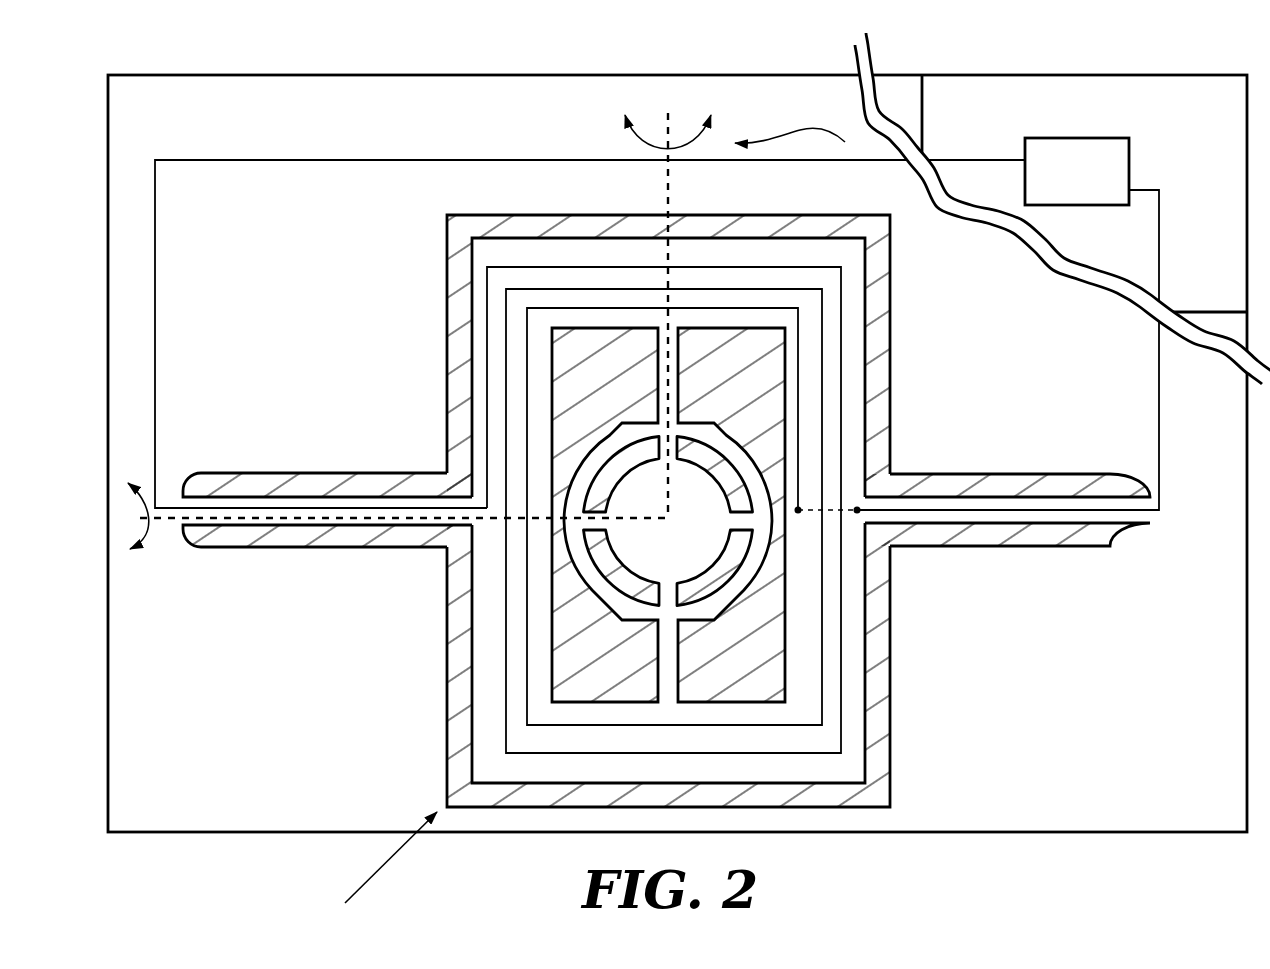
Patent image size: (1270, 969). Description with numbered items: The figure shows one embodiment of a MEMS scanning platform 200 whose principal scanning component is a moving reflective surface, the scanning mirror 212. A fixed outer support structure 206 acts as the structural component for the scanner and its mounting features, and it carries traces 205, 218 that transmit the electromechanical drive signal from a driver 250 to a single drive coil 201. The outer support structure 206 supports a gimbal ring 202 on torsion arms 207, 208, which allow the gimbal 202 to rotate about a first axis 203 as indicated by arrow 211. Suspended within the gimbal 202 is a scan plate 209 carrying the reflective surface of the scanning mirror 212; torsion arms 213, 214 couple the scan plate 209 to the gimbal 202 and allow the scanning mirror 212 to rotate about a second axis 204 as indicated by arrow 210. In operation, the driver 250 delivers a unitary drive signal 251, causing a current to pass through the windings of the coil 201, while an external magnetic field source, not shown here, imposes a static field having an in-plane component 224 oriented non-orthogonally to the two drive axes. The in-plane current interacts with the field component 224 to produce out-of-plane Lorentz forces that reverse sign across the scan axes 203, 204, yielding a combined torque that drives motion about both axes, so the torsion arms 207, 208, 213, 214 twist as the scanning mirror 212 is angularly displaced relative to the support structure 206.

The MEMS scanning platform 200 is at (410, 74).
The single drive coil 201 is at (505, 380).
The gimbal ring 202 is at (470, 326).
The first axis 203 is at (163, 520).
The axis 204 is at (670, 126).
The trace 205 is at (318, 159).
The outer support structure 206 is at (303, 307).
The torsion arm 207 is at (299, 523).
The torsion arm 208 is at (975, 523).
The scan plate 209 is at (598, 582).
The arrow 210 is at (637, 141).
The arrow 211 is at (143, 548).
The scanning mirror 212 is at (695, 554).
The torsion arm 213 is at (680, 392).
The torsion arm 214 is at (682, 656).
The trace 218 is at (1157, 387).
The in-plane magnetic field component 224 is at (363, 883).
The driver 250 is at (1072, 173).
The unitary drive signal 251 is at (793, 134).